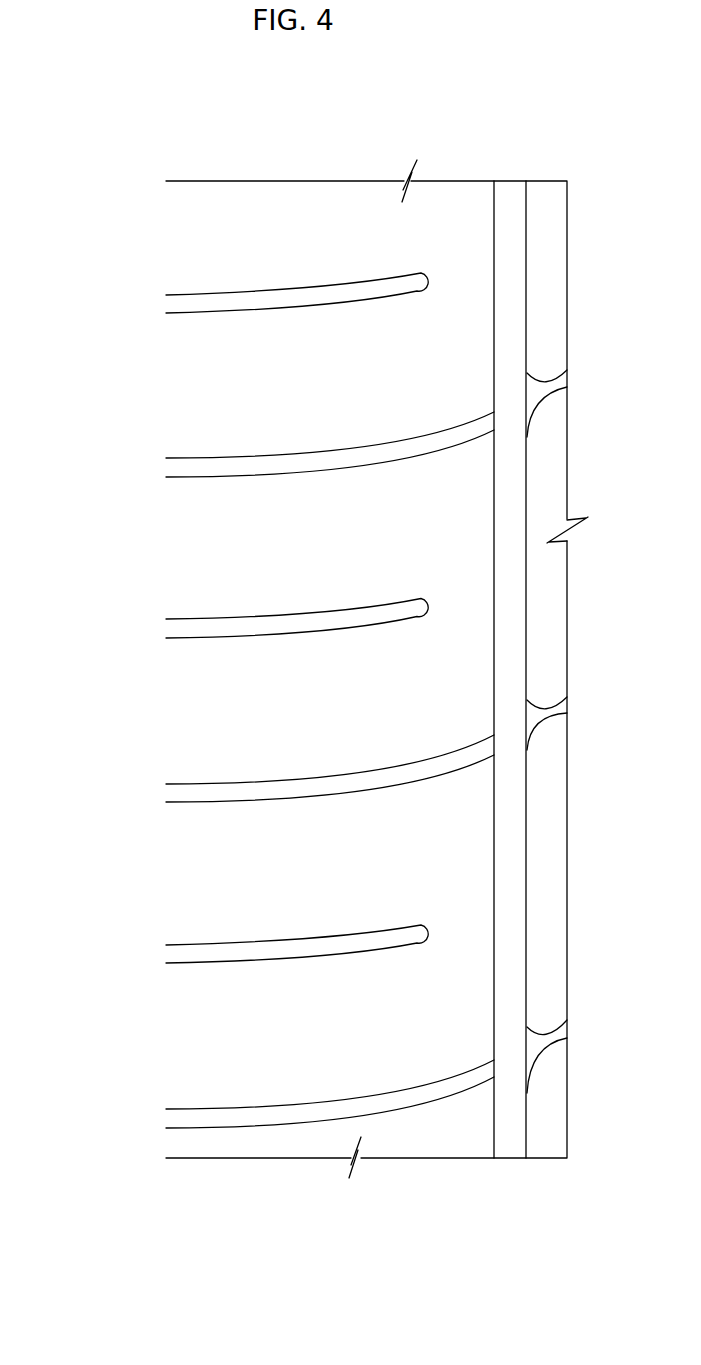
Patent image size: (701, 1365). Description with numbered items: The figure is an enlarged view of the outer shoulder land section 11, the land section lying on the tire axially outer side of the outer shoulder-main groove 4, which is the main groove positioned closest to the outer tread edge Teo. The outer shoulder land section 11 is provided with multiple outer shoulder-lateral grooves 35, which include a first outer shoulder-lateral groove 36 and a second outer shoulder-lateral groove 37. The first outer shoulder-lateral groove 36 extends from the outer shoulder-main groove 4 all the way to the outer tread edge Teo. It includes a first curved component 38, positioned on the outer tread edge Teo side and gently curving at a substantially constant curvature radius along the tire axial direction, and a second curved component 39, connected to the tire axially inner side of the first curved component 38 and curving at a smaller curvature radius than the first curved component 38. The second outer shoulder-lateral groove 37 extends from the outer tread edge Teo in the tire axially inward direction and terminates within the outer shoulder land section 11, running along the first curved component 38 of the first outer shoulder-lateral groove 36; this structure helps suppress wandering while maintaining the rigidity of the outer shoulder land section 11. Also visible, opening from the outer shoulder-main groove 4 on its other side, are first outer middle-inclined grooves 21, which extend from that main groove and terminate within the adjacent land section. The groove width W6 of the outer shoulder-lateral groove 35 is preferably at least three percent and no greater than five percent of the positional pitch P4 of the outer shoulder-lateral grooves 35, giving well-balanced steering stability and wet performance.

The outer shoulder-main groove 4 is at (509, 214).
The outer shoulder land section 11 is at (322, 213).
The first outer middle-inclined groove 21 is at (551, 384).
The outer shoulder-lateral grooves 35 is at (90, 263).
The first outer shoulder-lateral groove 36 is at (291, 820).
The second outer shoulder-lateral groove 37 is at (299, 293).
The first curved component 38 is at (301, 1119).
The second curved component 39 is at (470, 1091).
The outer tread edge Teo is at (166, 213).
The positional pitch P4 is at (60, 458).
The groove width W6 is at (245, 837).